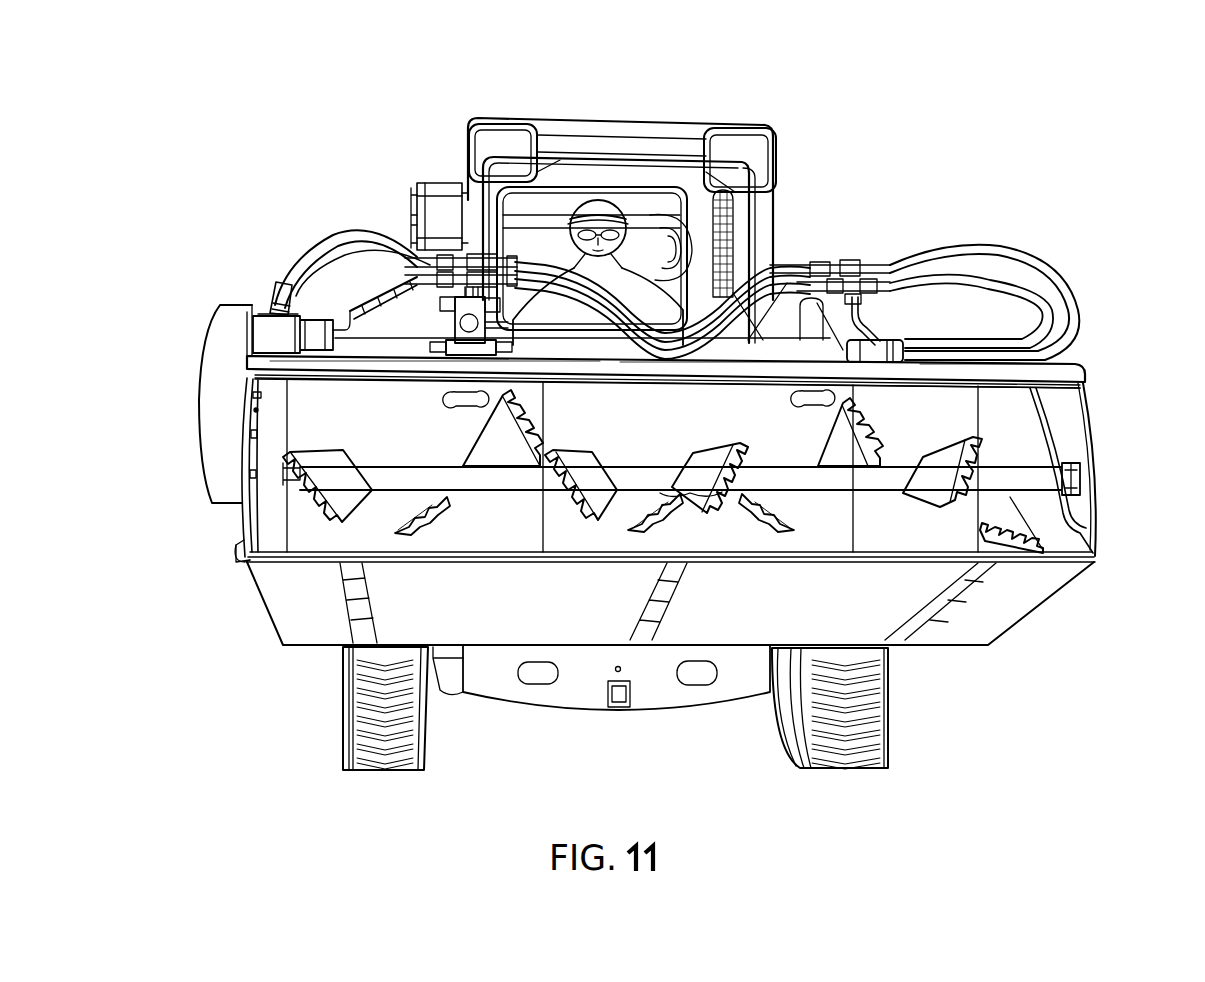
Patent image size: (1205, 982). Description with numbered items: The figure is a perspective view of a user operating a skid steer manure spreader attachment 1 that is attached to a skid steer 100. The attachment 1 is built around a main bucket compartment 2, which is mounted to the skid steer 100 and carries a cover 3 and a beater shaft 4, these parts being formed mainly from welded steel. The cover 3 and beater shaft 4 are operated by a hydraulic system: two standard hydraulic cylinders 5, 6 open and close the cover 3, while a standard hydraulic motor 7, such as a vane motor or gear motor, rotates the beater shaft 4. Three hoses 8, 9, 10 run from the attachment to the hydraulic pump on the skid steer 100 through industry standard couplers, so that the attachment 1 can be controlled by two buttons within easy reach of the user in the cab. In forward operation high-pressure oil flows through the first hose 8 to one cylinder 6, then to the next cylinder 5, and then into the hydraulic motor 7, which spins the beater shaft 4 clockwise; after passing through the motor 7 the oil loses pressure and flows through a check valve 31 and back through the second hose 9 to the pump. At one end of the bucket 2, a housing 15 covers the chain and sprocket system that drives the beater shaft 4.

The skid steer manure spreader attachment 1 is at (245, 648).
The main bucket compartment 2 is at (880, 600).
The cover 3 is at (997, 370).
The beater shaft 4 is at (680, 500).
The hydraulic cylinder 5 is at (468, 332).
The hydraulic cylinder 6 is at (875, 350).
The hydraulic motor 7 is at (262, 332).
The first hose 8 is at (370, 255).
The second hose 9 is at (765, 275).
The hose 10 is at (396, 296).
The housing 15 is at (215, 405).
The check valve 31 is at (280, 307).
The skid steer 100 is at (583, 128).